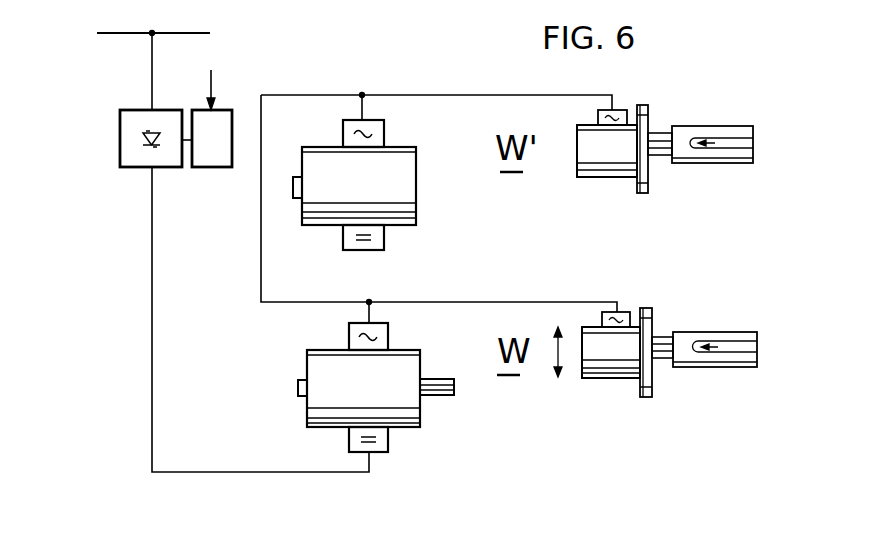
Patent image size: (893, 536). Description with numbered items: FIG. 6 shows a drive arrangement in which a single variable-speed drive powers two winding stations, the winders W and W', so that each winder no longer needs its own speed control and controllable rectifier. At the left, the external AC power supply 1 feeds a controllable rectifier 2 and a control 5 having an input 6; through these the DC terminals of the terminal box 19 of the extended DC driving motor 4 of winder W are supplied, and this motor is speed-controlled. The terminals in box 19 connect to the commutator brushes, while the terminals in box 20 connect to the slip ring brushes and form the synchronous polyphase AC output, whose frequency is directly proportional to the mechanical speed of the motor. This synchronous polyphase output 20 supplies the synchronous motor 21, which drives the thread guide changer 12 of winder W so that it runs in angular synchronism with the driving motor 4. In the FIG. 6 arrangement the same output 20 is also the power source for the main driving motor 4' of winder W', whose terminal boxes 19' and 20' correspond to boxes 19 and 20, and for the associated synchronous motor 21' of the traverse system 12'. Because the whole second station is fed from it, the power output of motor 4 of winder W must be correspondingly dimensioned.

The external power supply 1 is at (123, 35).
The controllable rectifier 2 is at (120, 138).
The control 5 is at (207, 168).
The input 6 is at (219, 86).
The driving motor 4 is at (353, 400).
The main driving motor 4' is at (340, 201).
The terminal box 19 is at (396, 455).
The DC terminals 19' is at (390, 250).
The AC terminals 20 is at (395, 331).
The AC terminals 20' is at (395, 127).
The synchronous motor 21 is at (627, 375).
The synchronous motor 21' is at (622, 168).
The changer 12 is at (715, 324).
The traverse system 12' is at (712, 120).